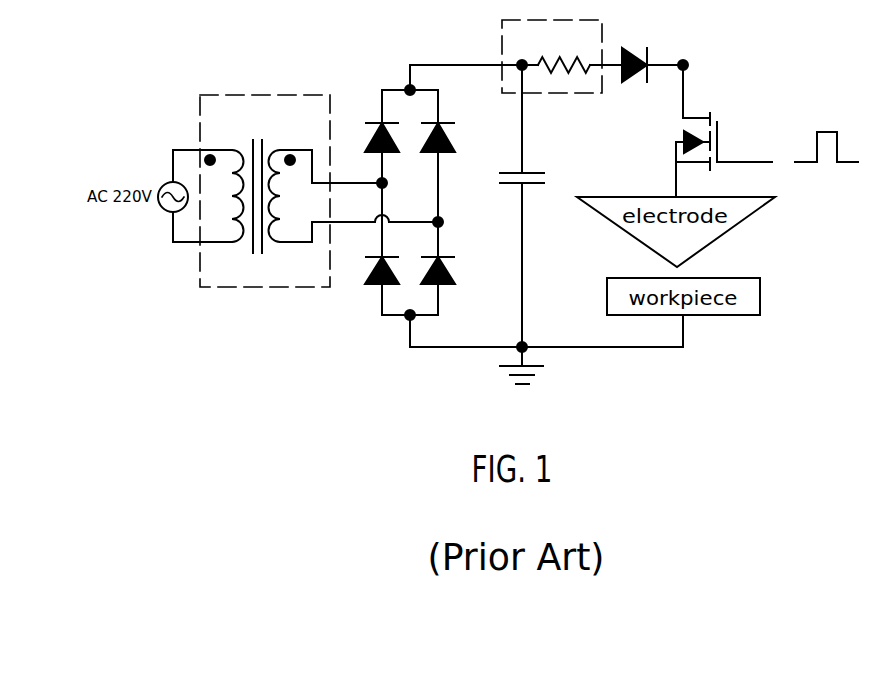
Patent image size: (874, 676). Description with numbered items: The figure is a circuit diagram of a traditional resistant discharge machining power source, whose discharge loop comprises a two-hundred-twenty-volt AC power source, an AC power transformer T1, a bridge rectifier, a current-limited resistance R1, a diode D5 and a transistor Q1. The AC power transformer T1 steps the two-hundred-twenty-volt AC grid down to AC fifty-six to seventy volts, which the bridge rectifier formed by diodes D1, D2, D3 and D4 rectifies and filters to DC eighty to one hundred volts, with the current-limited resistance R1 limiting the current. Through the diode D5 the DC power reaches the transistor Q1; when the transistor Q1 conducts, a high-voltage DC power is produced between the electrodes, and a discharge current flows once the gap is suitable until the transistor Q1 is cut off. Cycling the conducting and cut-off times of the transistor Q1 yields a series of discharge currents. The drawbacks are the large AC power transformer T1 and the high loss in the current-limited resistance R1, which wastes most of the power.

The AC power transformer T1 is at (265, 191).
The bridge rectifier diode D1 is at (394, 137).
The bridge rectifier diode D2 is at (394, 270).
The bridge rectifier diode D3 is at (451, 137).
The bridge rectifier diode D4 is at (451, 270).
The diode D5 is at (636, 52).
The current-limited resistance R1 is at (552, 56).
The transistor Q1 is at (712, 131).